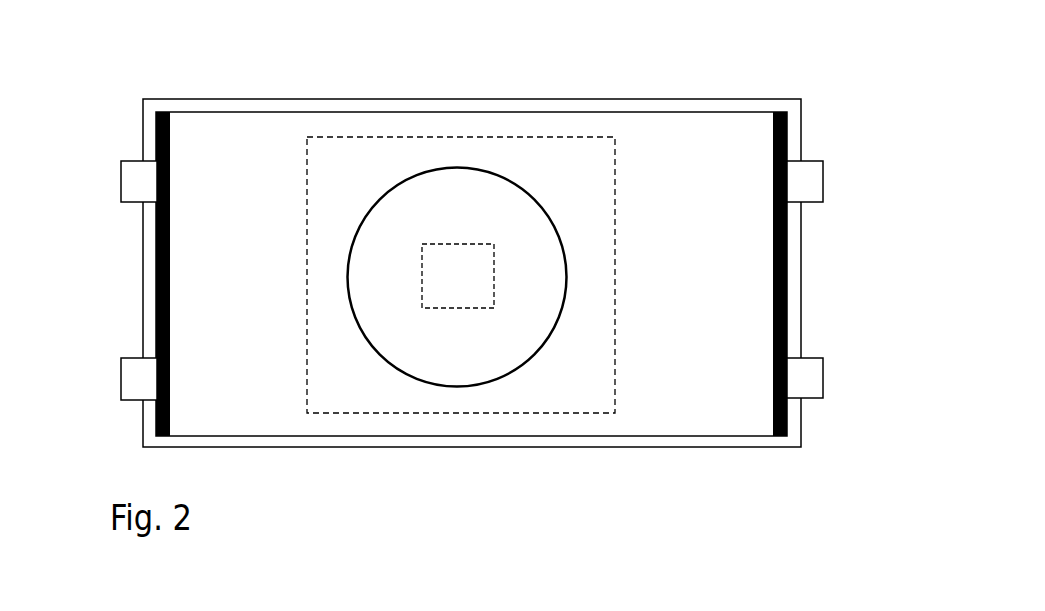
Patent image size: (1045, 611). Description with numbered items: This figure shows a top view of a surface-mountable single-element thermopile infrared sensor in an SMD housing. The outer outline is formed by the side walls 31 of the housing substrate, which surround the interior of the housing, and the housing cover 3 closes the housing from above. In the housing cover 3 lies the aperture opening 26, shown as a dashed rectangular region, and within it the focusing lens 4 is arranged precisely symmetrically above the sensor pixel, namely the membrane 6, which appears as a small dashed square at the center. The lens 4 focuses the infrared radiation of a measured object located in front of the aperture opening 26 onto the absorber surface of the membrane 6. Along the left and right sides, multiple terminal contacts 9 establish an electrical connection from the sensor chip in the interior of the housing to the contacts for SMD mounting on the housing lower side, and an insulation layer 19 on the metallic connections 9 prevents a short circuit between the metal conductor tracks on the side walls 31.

The housing cover 3 is at (565, 112).
The focusing lens 4 is at (480, 202).
The membrane 6 is at (457, 242).
The metallic connections 9 is at (120, 182).
The insulation layer 19 is at (156, 237).
The aperture opening 26 is at (394, 188).
The side walls 31 is at (148, 421).